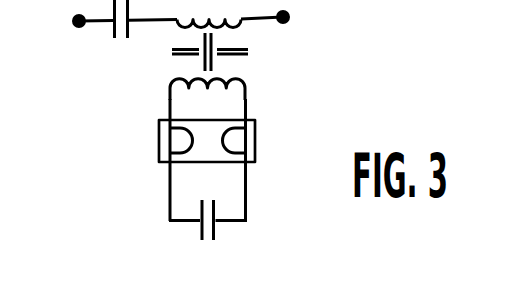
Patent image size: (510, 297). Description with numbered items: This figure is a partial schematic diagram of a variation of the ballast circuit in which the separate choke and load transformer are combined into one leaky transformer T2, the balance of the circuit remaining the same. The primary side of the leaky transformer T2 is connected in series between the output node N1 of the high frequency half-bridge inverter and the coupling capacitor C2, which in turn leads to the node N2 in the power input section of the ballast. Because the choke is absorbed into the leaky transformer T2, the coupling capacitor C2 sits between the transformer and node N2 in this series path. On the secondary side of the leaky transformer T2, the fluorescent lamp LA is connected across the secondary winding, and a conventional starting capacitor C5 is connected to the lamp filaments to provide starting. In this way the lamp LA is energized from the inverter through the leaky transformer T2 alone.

The node N2 is at (82, 37).
The coupling capacitor C2 is at (121, 35).
The leaky transformer T2 is at (221, 60).
The output node of the inverter N1 is at (275, 34).
The fluorescent lamp LA is at (223, 160).
The starting capacitor C5 is at (208, 235).